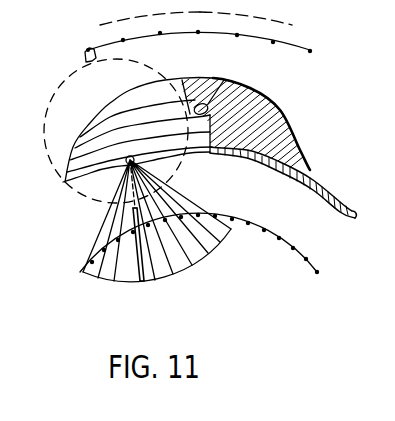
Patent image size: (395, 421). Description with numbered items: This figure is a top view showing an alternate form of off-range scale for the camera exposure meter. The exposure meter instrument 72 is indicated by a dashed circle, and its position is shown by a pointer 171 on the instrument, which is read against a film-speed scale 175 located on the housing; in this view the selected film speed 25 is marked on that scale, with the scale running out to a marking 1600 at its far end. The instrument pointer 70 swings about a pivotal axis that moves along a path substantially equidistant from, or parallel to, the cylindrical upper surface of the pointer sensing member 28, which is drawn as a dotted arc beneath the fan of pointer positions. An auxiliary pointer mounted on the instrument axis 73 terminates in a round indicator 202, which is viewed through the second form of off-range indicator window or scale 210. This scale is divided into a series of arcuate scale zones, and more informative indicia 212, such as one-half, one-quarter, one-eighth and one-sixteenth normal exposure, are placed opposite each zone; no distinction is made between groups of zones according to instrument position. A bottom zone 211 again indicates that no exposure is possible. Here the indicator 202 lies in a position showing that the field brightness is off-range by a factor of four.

The film-speed scale 175 is at (76, 27).
The reference arc label 1600 is at (264, 29).
The dotted curve 25 is at (194, 39).
The pointer 171 is at (80, 60).
The exposure meter instrument 72 is at (46, 108).
The indicia 212 is at (121, 90).
The round indicator 202 is at (208, 104).
The off-range indicator window 210 is at (268, 116).
The bottom zone 211 is at (338, 194).
The instrument axis 73 is at (177, 170).
The pointer 70 is at (140, 283).
The pointer sensing member 28 is at (295, 256).